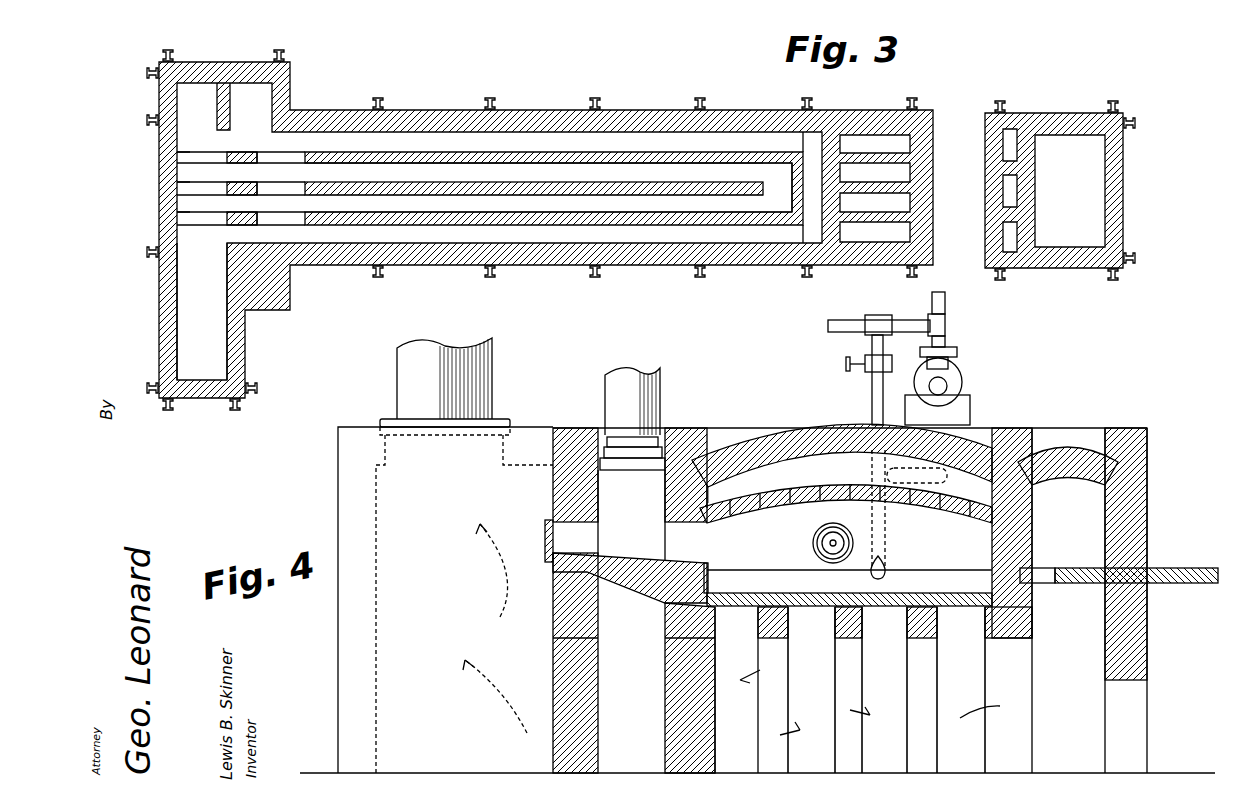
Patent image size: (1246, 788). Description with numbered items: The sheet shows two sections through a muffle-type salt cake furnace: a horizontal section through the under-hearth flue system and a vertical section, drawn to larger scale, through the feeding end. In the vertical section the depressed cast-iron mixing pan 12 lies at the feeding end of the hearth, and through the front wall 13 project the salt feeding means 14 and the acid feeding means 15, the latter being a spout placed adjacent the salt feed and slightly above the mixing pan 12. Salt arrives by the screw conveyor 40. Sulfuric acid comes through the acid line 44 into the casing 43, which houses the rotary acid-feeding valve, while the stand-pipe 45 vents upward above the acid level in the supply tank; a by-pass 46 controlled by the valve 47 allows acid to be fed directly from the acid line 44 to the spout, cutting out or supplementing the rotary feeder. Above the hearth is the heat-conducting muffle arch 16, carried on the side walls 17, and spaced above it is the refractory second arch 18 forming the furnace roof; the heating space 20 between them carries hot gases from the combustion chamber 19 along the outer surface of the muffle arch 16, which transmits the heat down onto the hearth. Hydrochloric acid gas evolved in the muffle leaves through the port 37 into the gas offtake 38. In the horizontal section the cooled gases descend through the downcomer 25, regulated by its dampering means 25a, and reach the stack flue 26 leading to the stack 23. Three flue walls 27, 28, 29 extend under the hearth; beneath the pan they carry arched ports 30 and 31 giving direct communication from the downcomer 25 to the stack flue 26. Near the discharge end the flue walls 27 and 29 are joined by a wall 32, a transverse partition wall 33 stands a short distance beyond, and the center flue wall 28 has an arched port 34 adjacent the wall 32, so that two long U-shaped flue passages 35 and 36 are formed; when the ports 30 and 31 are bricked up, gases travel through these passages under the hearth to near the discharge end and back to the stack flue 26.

In FIG. 4, the mixing pan 12 is at (790, 592).
In FIG. 3, the front wall 13 is at (160, 267).
In FIG. 4, the salt feeding means 14 is at (820, 532).
In FIG. 4, the acid feeding means 15 is at (888, 565).
In FIG. 4, the muffle arch 16 is at (772, 507).
In FIG. 4, the side walls 17 is at (707, 495).
In FIG. 4, the second arch 18 is at (797, 428).
In FIG. 3, the combustion chamber 19 is at (1060, 190).
In FIG. 4, the heating space 20 is at (763, 485).
In FIG. 4, the stack 23 is at (492, 352).
In FIG. 3, the downcomer 25 is at (243, 93).
In FIG. 4, the downcomer 25 is at (1069, 600).
In FIG. 4, the dampering means 25a is at (1172, 568).
In FIG. 3, the stack flue 26 is at (190, 298).
In FIG. 3, the flue wall 27 is at (372, 156).
In FIG. 4, the flue wall 27 is at (937, 630).
In FIG. 3, the center flue wall 28 is at (380, 190).
In FIG. 4, the center flue wall 28 is at (862, 630).
In FIG. 3, the flue wall 29 is at (380, 222).
In FIG. 4, the flue wall 29 is at (788, 630).
In FIG. 3, the arched port 30 is at (183, 215).
In FIG. 3, the arched port 31 is at (293, 215).
In FIG. 4, the arched port 31 is at (915, 695).
In FIG. 3, the wall 32 is at (805, 222).
In FIG. 3, the transverse partition wall 33 is at (815, 148).
In FIG. 3, the arched port 34 is at (773, 187).
In FIG. 3, the U-shaped flue passage 35 is at (548, 189).
In FIG. 3, the U-shaped flue passage 36 is at (458, 203).
In FIG. 4, the port 37 is at (698, 545).
In FIG. 4, the gas offtake 38 is at (605, 395).
In FIG. 4, the screw conveyor 40 is at (855, 545).
In FIG. 4, the casing 43 is at (958, 385).
In FIG. 4, the acid line 44 is at (848, 325).
In FIG. 4, the stand-pipe 45 is at (945, 303).
In FIG. 4, the by-pass 46 is at (872, 390).
In FIG. 4, the valve 47 is at (862, 362).